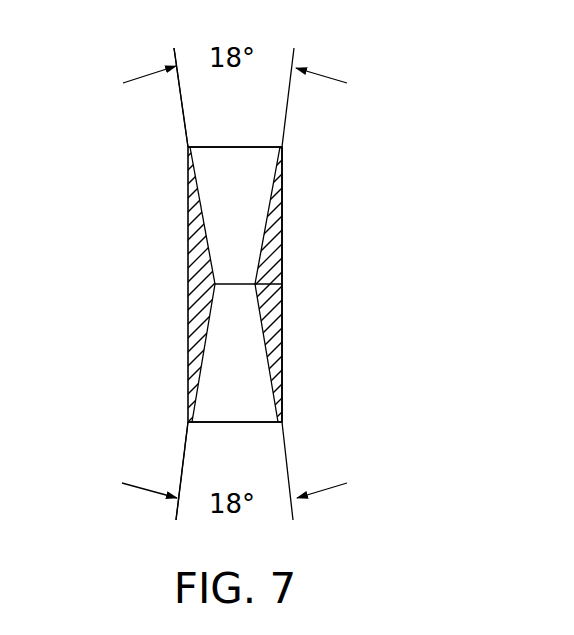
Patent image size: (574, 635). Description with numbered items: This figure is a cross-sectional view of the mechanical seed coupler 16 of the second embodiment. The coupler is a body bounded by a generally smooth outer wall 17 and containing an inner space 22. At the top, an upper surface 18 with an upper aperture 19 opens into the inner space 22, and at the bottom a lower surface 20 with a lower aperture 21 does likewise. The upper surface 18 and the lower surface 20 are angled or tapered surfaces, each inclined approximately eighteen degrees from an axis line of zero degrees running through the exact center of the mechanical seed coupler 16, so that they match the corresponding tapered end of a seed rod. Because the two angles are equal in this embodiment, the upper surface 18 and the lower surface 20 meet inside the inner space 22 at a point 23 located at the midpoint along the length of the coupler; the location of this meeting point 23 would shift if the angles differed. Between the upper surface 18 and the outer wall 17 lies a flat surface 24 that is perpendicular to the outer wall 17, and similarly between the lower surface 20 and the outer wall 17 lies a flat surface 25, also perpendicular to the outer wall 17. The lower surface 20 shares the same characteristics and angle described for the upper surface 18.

The mechanical seed coupler 16 is at (178, 240).
The outer wall 17 is at (283, 237).
The upper surface 18 is at (203, 202).
The upper aperture 19 is at (258, 132).
The lower surface 20 is at (202, 365).
The lower aperture 21 is at (252, 434).
The inner space 22 is at (219, 252).
The point 23 is at (215, 284).
The flat surface 24 is at (187, 146).
The flat surface 25 is at (188, 422).